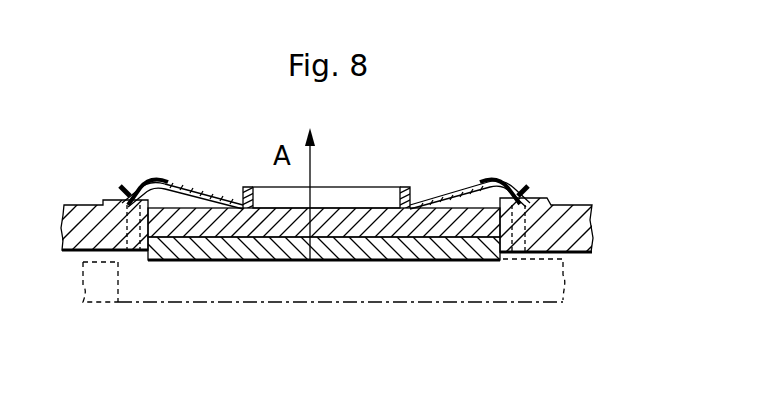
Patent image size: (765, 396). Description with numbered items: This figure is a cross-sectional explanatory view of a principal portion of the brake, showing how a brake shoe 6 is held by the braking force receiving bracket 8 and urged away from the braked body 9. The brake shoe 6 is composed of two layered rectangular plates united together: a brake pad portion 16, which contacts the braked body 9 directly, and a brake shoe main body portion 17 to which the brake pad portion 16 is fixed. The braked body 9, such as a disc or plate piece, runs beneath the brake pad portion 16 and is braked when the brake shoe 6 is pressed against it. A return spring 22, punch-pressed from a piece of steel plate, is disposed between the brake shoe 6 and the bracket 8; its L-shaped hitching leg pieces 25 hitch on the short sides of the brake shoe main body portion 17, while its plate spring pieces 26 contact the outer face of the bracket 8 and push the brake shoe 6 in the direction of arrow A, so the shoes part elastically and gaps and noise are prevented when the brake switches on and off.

The brake shoe 6 is at (525, 307).
The braking force receiving bracket 8 is at (568, 200).
The braked body 9 is at (235, 307).
The brake pad portion 16 is at (433, 250).
The brake shoe main body portion 17 is at (462, 248).
The return spring 22 is at (449, 188).
The hitching leg piece 25 is at (113, 304).
The plate spring piece 26 is at (152, 178).